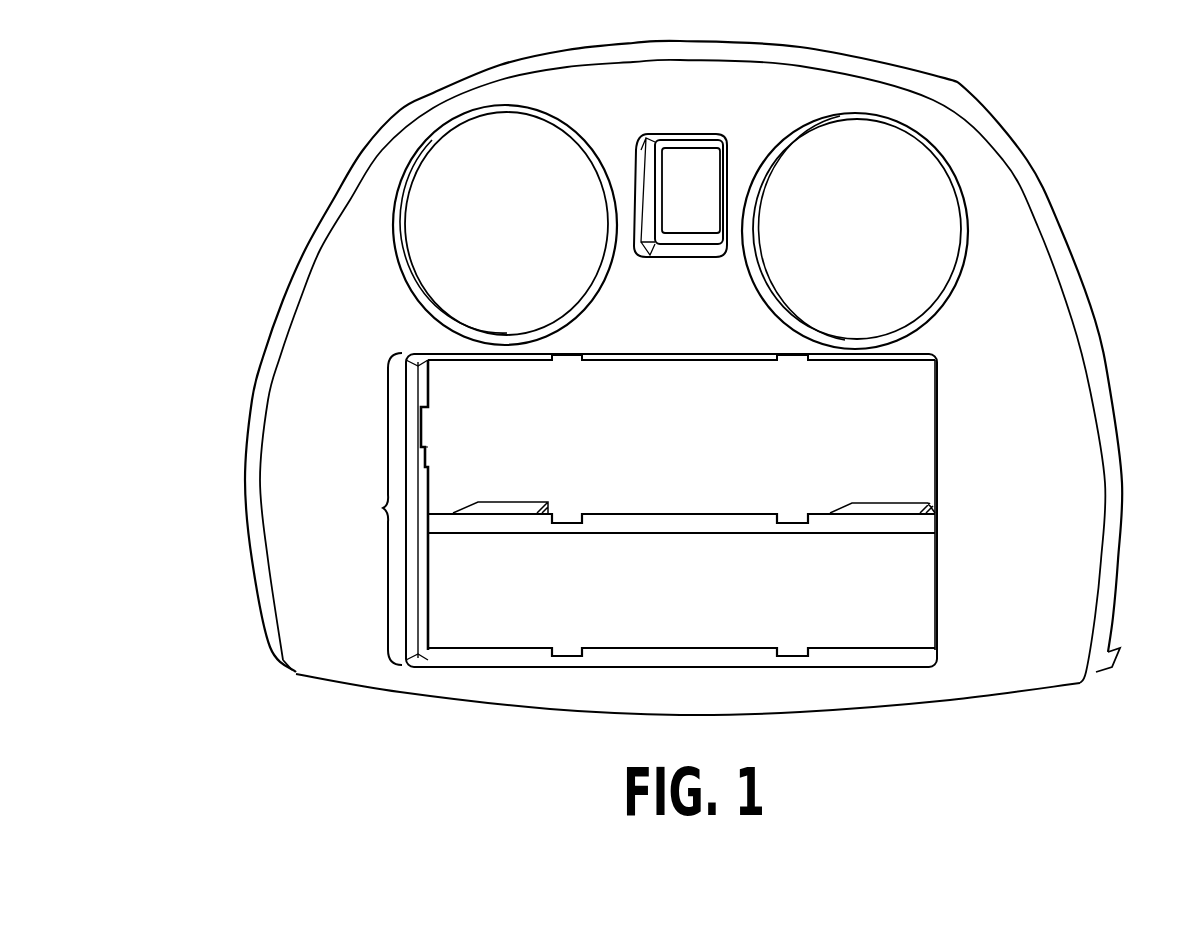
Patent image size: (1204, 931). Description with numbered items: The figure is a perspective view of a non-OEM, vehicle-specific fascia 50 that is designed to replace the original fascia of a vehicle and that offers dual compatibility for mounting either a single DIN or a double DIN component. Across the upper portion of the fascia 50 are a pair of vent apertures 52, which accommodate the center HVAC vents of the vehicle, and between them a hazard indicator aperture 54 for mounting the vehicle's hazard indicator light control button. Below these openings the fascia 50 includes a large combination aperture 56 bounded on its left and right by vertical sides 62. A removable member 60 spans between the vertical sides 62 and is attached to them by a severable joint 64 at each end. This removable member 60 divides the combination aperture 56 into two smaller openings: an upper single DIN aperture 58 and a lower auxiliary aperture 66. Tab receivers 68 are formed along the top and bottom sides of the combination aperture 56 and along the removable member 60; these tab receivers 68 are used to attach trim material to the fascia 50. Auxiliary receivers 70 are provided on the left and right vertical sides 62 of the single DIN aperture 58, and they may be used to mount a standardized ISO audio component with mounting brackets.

The fascia 50 is at (953, 148).
The vent apertures 52 is at (467, 181).
The hazard indicator aperture 54 is at (683, 170).
The combination aperture 56 is at (383, 507).
The single DIN aperture 58 is at (798, 502).
The removable member 60 is at (680, 520).
The vertical sides 62 is at (402, 595).
The severable joint 64 is at (426, 520).
The auxiliary aperture 66 is at (709, 663).
The tab receivers 68 is at (562, 360).
The auxiliary receivers 70 is at (422, 435).